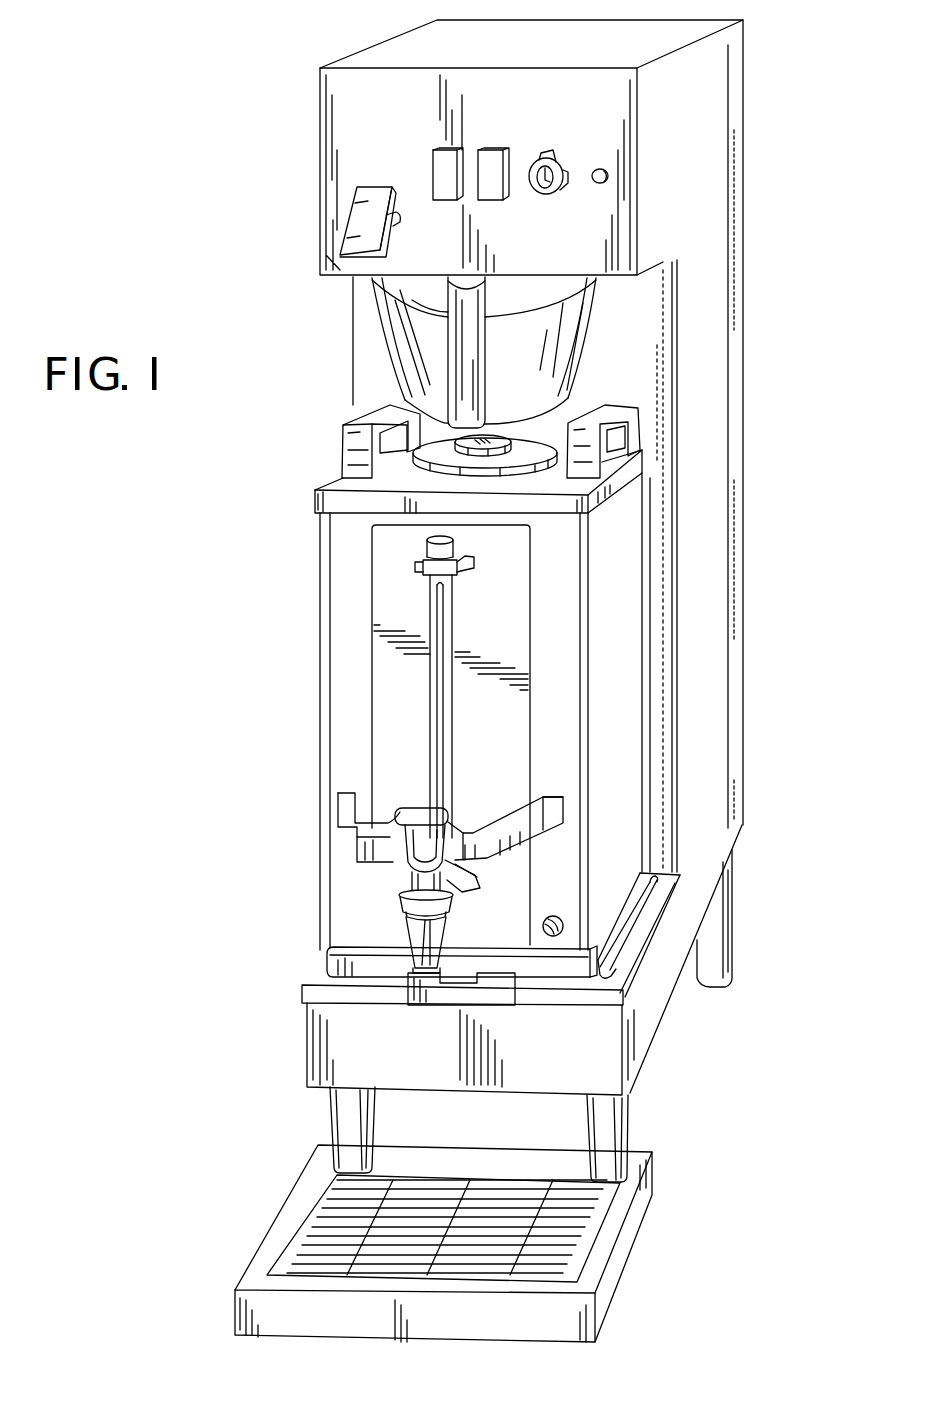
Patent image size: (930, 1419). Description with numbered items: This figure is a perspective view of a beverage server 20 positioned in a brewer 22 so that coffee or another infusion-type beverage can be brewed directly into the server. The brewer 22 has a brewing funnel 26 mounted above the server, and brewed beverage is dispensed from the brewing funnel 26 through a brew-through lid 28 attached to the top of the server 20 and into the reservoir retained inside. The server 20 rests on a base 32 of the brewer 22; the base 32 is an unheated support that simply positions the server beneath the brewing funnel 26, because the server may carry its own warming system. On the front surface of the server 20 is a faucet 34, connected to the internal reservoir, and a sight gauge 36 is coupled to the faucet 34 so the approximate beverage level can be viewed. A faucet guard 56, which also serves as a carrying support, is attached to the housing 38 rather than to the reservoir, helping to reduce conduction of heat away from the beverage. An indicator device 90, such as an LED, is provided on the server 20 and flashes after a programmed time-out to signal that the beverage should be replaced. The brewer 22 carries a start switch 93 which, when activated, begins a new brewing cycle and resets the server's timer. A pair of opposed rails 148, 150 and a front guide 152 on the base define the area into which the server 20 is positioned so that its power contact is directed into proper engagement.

The beverage server 20 is at (312, 664).
The brewer 22 is at (213, 181).
The brewing funnel 26 is at (400, 358).
The brew-through lid 28 is at (467, 478).
The base 32 is at (322, 1033).
The faucet 34 is at (420, 930).
The sight gauge 36 is at (437, 746).
The housing 38 is at (347, 870).
The faucet guard 56 is at (480, 850).
The indicator device 90 is at (548, 920).
The start switch 93 is at (437, 176).
The side rail 148 is at (330, 950).
The side rail 150 is at (630, 923).
The front guide 152 is at (488, 1001).